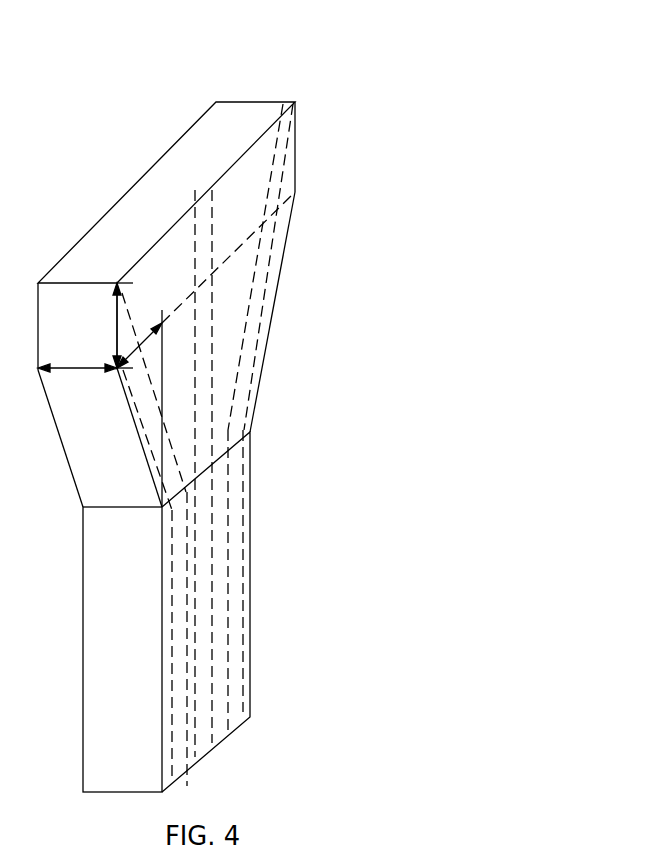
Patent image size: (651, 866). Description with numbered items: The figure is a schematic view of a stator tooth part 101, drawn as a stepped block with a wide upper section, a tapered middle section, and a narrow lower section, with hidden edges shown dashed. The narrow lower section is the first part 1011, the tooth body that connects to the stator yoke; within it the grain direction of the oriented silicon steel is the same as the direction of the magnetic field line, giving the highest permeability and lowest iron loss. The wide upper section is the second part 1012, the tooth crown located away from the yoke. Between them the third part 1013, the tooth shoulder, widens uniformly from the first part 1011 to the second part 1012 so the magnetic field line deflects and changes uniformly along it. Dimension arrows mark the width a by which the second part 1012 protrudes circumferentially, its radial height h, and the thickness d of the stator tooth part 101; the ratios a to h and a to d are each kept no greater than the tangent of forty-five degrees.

The stator tooth part 101 is at (131, 46).
The second part 1012 is at (295, 147).
The third part 1013 is at (274, 298).
The first part 1011 is at (252, 650).